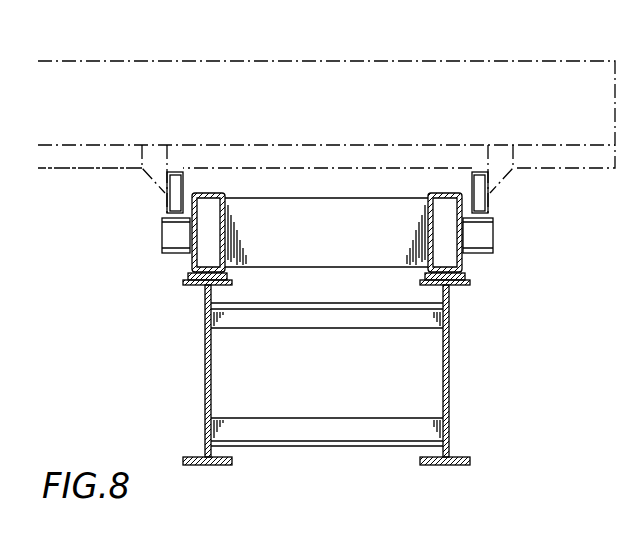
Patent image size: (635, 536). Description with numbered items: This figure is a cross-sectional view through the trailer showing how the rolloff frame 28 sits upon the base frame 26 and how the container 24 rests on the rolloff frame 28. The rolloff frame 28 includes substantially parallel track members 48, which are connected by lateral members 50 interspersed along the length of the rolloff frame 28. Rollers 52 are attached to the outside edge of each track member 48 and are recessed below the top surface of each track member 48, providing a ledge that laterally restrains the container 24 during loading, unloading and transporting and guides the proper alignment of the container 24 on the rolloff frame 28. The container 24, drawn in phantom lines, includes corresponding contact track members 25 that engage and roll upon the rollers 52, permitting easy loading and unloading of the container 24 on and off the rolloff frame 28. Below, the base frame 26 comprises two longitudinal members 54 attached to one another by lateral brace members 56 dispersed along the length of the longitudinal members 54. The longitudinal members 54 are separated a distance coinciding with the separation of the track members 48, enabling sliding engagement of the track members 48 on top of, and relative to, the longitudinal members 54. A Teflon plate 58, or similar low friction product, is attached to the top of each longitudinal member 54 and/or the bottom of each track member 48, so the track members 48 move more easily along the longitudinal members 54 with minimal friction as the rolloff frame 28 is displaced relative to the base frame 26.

The container 24 is at (328, 60).
The contact track members 25 is at (186, 181).
The base frame 26 is at (336, 369).
The rolloff frame 28 is at (326, 183).
The track members 48 is at (190, 262).
The lateral members 50 is at (303, 243).
The rollers 52 is at (162, 235).
The longitudinal members 54 is at (205, 381).
The lateral brace members 56 is at (280, 423).
The Teflon plate 58 is at (182, 282).